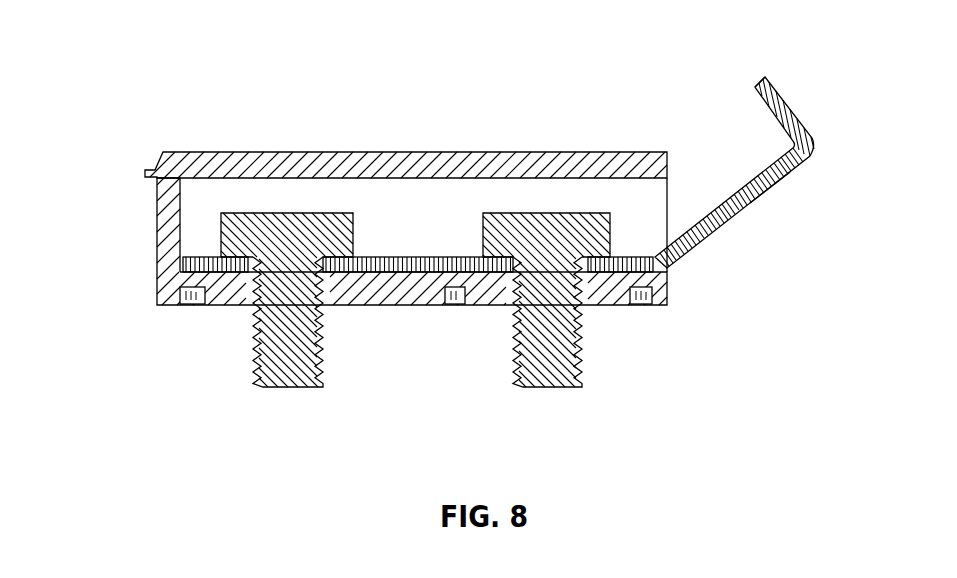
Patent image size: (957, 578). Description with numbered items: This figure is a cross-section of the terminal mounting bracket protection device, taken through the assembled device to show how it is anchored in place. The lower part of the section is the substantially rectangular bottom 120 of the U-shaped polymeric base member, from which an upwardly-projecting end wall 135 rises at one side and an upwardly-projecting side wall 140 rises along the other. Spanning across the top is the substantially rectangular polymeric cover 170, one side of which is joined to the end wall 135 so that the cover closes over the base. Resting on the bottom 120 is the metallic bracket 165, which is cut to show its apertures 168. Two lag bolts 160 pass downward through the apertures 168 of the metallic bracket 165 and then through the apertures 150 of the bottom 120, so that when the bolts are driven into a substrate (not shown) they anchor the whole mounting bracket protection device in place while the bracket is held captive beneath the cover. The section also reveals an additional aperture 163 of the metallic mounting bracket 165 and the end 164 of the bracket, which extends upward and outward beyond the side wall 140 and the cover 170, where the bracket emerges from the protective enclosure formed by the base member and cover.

The bottom 120 is at (672, 284).
The end wall 135 is at (150, 233).
The side wall 140 is at (673, 198).
The apertures 150 is at (240, 298).
The lag bolts 160 is at (305, 395).
The aperture 163 is at (768, 200).
The end 164 is at (757, 73).
The metallic bracket 165 is at (775, 143).
The apertures 168 is at (323, 258).
The cover 170 is at (415, 143).